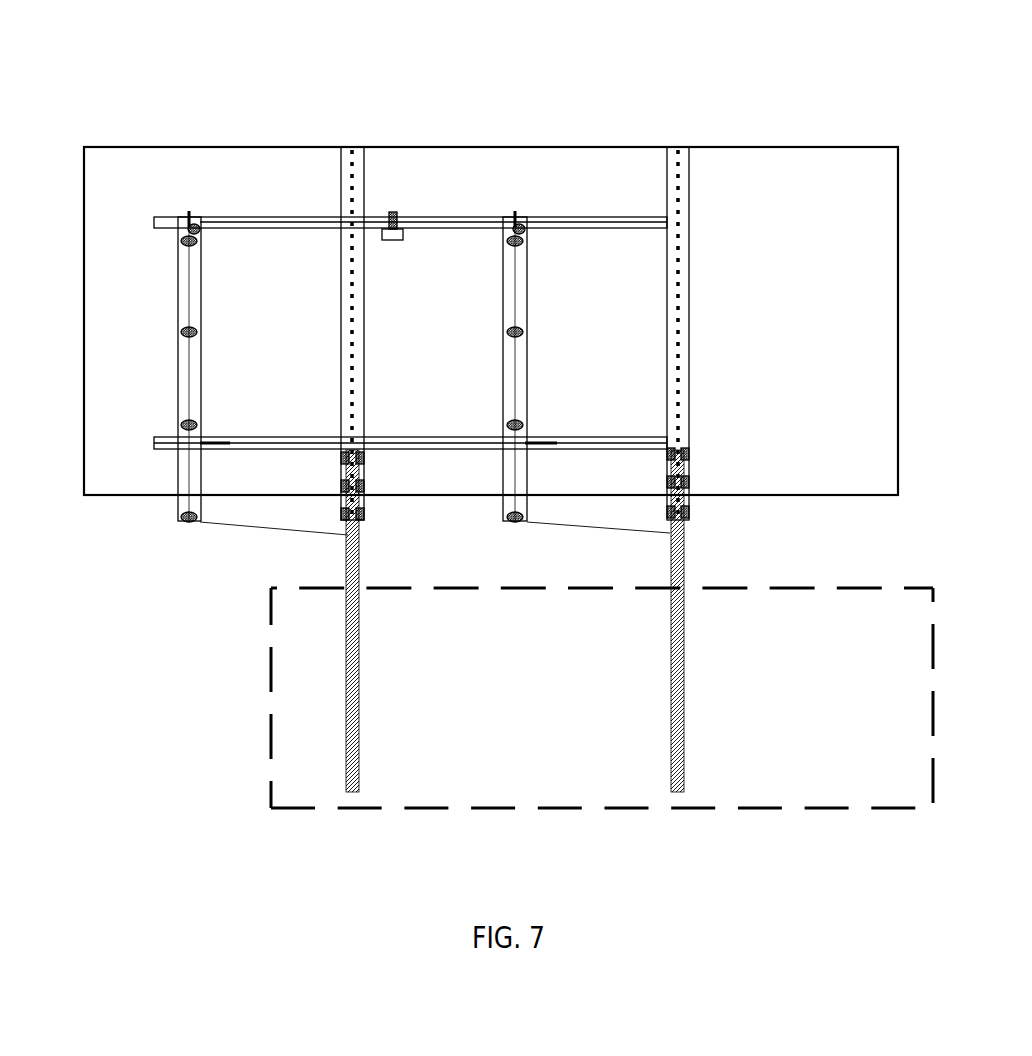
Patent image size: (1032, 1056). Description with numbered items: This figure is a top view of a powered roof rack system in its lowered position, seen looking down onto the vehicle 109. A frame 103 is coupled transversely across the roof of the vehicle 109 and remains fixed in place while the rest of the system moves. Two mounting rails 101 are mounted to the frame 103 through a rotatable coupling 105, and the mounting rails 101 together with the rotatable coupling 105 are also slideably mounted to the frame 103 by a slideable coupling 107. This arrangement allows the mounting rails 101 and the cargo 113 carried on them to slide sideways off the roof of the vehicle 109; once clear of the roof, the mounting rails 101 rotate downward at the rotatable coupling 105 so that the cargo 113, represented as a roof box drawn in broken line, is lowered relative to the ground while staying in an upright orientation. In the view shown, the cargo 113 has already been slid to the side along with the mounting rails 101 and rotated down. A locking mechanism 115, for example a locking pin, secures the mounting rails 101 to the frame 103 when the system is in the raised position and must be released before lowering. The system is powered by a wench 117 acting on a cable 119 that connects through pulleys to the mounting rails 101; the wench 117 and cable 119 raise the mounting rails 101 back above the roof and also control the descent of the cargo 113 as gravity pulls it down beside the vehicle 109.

The mounting rails 101 is at (351, 745).
The frame 103 is at (668, 229).
The rotatable coupling 105 is at (688, 507).
The slideable coupling 107 is at (183, 243).
The vehicle 109 is at (810, 225).
The cargo 113 is at (891, 763).
The locking mechanism 115 is at (193, 232).
The wench 117 is at (392, 212).
The cable 119 is at (248, 525).